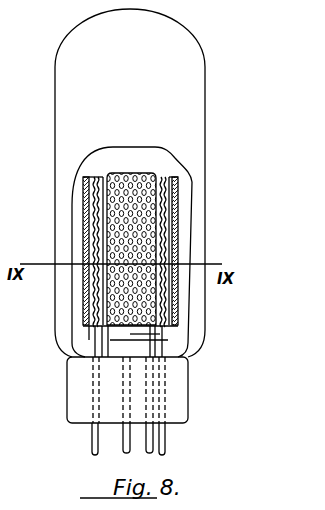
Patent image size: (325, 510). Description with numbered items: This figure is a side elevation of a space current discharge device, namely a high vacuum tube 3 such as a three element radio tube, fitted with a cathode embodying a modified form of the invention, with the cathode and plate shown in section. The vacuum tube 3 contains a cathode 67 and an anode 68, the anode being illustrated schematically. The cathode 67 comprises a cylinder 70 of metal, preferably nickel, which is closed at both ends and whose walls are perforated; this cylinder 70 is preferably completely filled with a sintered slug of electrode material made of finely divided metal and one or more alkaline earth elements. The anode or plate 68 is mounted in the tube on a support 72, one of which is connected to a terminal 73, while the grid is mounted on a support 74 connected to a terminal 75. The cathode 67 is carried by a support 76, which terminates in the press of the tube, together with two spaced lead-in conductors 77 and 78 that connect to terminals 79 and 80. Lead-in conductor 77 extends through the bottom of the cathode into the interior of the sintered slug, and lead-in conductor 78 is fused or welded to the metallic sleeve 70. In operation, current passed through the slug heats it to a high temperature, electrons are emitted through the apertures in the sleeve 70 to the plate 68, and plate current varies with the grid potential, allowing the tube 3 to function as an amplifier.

The high vacuum tube 3 is at (42, 197).
The cathode 67 is at (145, 172).
The anode 68 is at (178, 243).
The cylinder 70 is at (153, 233).
The support 72 is at (95, 344).
The terminal 73 is at (167, 440).
The support 74 is at (95, 329).
The terminal 75 is at (92, 438).
The support 76 is at (68, 352).
The lead-in conductor 77 is at (160, 334).
The lead-in conductor 78 is at (168, 340).
The terminal 79 is at (123, 450).
The terminal 80 is at (152, 451).